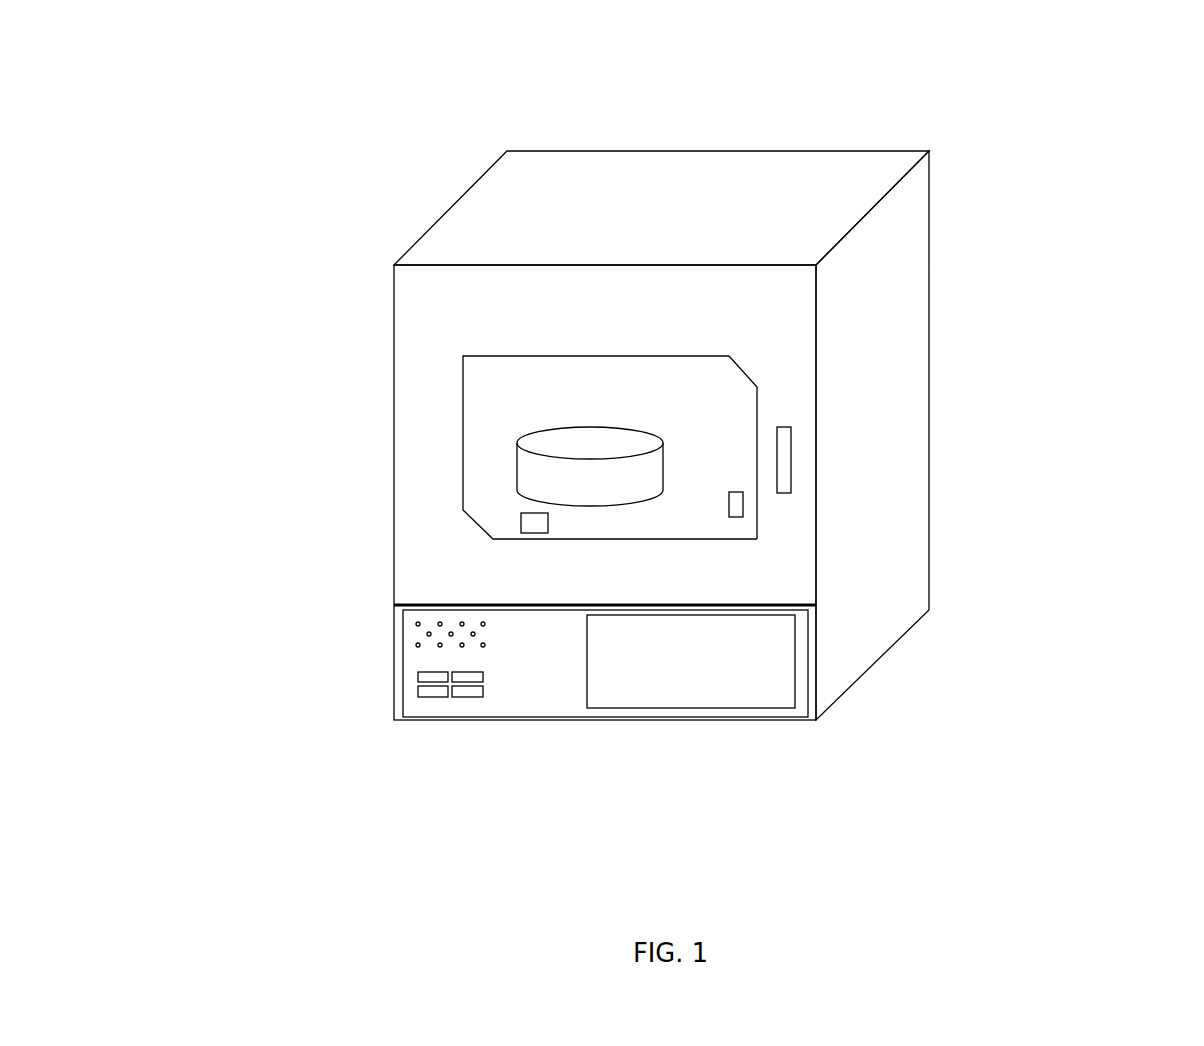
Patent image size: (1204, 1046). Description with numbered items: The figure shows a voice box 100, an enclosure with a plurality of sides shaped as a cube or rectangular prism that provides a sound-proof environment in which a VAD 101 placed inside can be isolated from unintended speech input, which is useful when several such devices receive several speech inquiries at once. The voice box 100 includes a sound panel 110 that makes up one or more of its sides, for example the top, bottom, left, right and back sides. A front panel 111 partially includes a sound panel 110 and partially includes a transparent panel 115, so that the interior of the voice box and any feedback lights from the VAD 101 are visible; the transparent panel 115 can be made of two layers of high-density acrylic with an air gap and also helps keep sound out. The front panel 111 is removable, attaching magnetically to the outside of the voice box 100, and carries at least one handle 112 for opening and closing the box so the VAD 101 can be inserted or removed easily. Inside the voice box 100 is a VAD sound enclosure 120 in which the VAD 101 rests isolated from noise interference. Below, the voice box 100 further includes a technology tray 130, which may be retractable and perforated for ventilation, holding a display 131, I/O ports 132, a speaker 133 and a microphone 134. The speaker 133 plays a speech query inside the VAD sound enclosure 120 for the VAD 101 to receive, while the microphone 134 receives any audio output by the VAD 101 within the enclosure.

The voice box 100 is at (701, 444).
The sound panel 110 is at (747, 182).
The front panel 111 is at (437, 302).
The transparent panel 115 is at (463, 384).
The VAD sound enclosure 120 is at (726, 387).
The VAD 101 is at (512, 445).
The handle 112 is at (792, 468).
The speaker 133 is at (746, 508).
The microphone 134 is at (512, 523).
The technology tray 130 is at (689, 726).
The display 131 is at (798, 659).
The I/O port(s) 132 is at (430, 703).